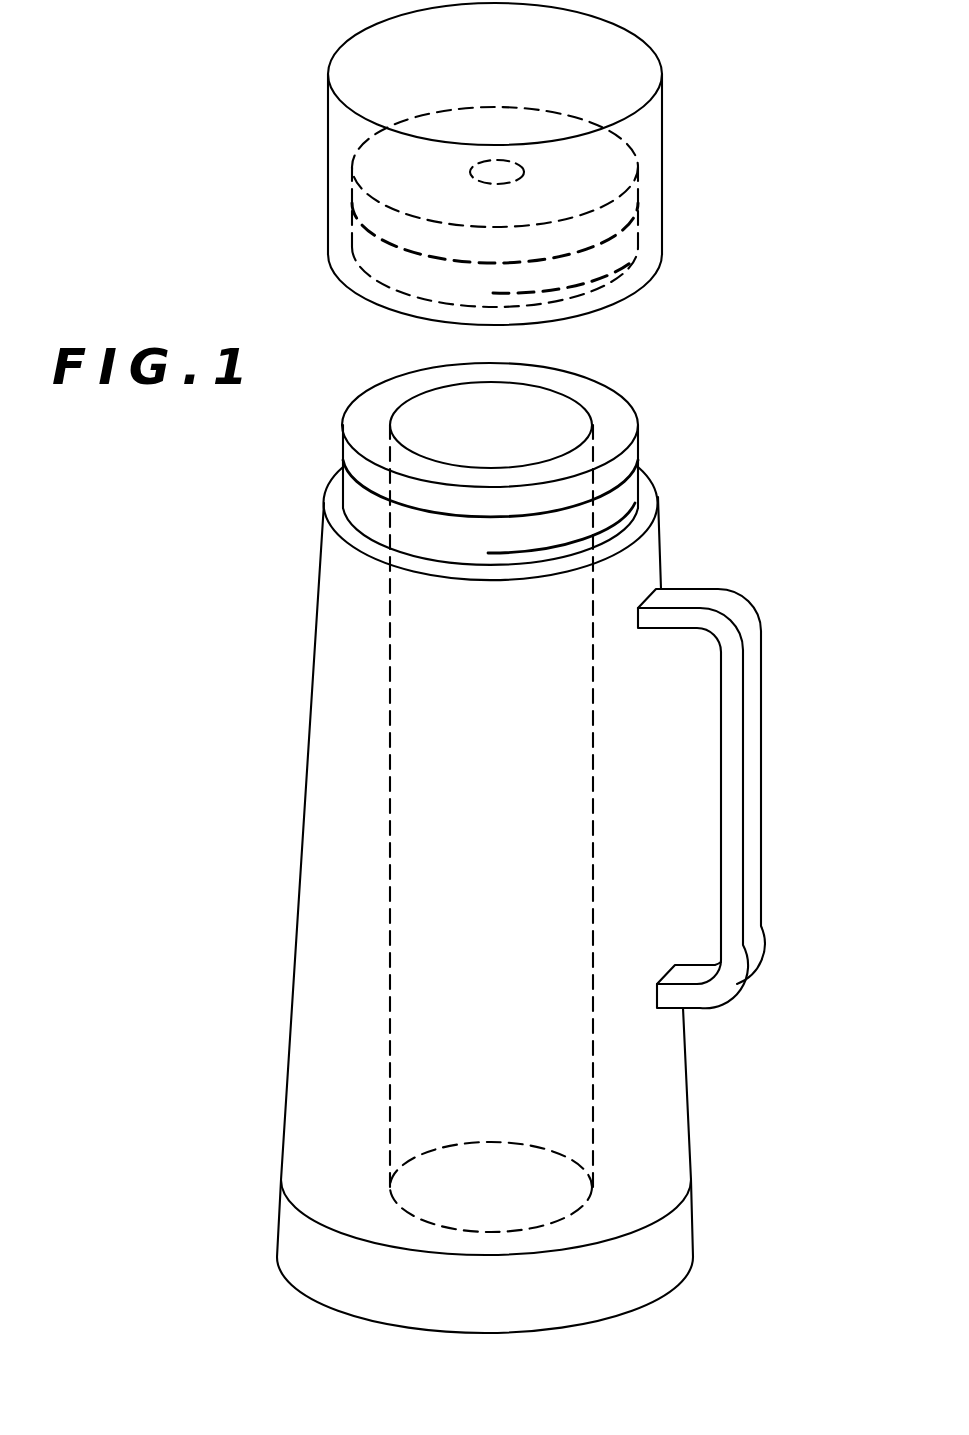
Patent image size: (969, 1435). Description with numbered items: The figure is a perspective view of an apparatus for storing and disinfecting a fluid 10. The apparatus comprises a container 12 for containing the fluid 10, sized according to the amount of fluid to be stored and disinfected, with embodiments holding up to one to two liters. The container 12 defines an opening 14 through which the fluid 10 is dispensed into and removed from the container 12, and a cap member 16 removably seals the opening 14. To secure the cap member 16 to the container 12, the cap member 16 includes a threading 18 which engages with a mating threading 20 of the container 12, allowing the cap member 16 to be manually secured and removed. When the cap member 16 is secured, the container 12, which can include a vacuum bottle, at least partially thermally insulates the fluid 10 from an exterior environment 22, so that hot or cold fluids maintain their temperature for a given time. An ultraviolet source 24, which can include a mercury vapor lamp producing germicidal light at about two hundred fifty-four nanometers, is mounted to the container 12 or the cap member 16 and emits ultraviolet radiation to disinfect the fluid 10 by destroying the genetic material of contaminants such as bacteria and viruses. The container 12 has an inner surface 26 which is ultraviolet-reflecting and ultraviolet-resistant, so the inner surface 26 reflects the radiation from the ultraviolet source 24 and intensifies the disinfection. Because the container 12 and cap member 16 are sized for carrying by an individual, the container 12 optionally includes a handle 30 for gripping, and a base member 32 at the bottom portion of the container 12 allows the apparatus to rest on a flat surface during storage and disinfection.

The fluid 10 is at (503, 839).
The container 12 is at (302, 845).
The opening 14 is at (527, 418).
The cap member 16 is at (518, 164).
The threading 18 is at (607, 233).
The mating threading 20 is at (640, 445).
The exterior environment 22 is at (176, 748).
The ultraviolet source 24 is at (476, 176).
The inner surface 26 is at (389, 790).
The handle 30 is at (766, 905).
The base member 32 is at (693, 1215).